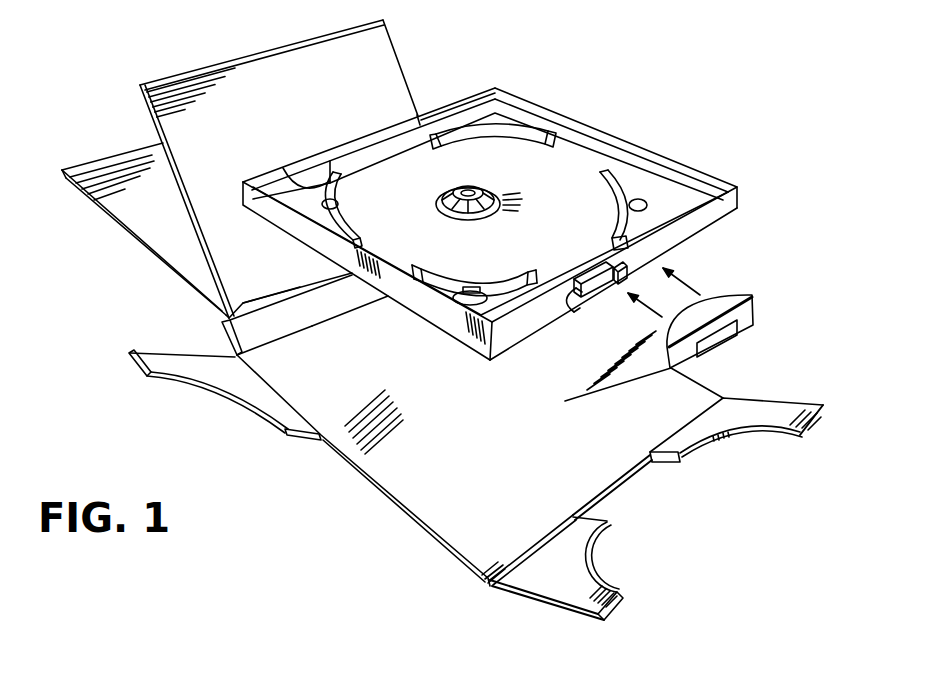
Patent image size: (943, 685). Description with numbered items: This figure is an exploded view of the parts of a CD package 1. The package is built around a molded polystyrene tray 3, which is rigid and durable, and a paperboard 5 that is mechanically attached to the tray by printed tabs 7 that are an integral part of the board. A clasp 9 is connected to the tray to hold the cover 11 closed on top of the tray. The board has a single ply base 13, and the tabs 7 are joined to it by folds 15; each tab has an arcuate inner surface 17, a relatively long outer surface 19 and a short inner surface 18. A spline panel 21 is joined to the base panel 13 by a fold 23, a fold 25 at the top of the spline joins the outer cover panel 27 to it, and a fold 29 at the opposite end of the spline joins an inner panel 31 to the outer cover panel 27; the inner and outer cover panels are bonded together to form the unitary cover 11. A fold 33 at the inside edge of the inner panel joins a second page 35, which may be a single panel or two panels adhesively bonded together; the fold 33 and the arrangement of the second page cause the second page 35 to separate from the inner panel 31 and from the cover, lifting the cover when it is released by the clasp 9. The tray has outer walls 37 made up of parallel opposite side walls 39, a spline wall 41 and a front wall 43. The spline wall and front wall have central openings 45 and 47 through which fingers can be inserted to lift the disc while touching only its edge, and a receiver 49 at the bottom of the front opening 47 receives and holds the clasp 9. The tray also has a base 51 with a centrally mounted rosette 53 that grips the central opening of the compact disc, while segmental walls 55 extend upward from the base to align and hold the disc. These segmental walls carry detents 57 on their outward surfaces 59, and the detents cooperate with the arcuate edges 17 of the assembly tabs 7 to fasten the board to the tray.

The CD package 1 is at (660, 87).
The tray 3 is at (657, 141).
The paperboard 5 is at (390, 500).
The printed tabs 7 is at (556, 608).
The clasp 9 is at (718, 347).
The cover 11 is at (143, 252).
The single ply base 13 is at (456, 524).
The folds 15 is at (542, 535).
The arcuate inner surface 17 is at (230, 400).
The short inner surface 18 is at (318, 440).
The long outer surfaces 19 is at (157, 355).
The spline panel 21 is at (325, 303).
The fold 23 is at (350, 314).
The fold 25 is at (307, 293).
The outer cover panel 27 is at (222, 308).
The fold 29 is at (127, 148).
The inner panel 31 is at (100, 179).
The fold 33 is at (252, 300).
The second page 35 is at (263, 52).
The outer walls 37 is at (627, 135).
The side walls 39 is at (547, 108).
The spline wall 41 is at (470, 93).
The front wall 43 is at (694, 218).
The central opening 45 is at (340, 160).
The central opening 47 is at (570, 310).
The receiver 49 is at (598, 247).
The base 51 is at (574, 228).
The rosette 53 is at (500, 186).
The segmental walls 55 is at (441, 276).
The detents 57 is at (300, 212).
The outward surfaces 59 is at (283, 168).